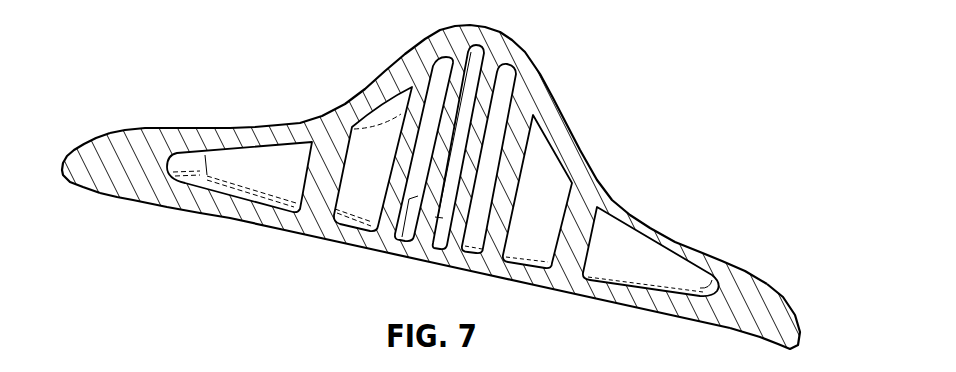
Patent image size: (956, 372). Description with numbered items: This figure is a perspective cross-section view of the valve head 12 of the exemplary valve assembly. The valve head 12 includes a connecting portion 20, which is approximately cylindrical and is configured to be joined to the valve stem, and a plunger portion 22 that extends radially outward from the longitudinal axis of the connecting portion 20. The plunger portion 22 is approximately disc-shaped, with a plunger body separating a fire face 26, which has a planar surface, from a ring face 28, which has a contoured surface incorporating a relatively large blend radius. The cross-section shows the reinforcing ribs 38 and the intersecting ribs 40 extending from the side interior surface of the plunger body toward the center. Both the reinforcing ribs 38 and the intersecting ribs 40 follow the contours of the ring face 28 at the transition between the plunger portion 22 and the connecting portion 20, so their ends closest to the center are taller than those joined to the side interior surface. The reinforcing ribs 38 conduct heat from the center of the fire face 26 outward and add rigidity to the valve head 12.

The valve head 12 is at (427, 186).
The connecting portion 20 is at (782, 291).
The plunger portion 22 is at (117, 117).
The fire face 26 is at (221, 217).
The ring face 28 is at (265, 127).
The reinforcing ribs 38 is at (459, 92).
The intersecting ribs 40 is at (428, 226).